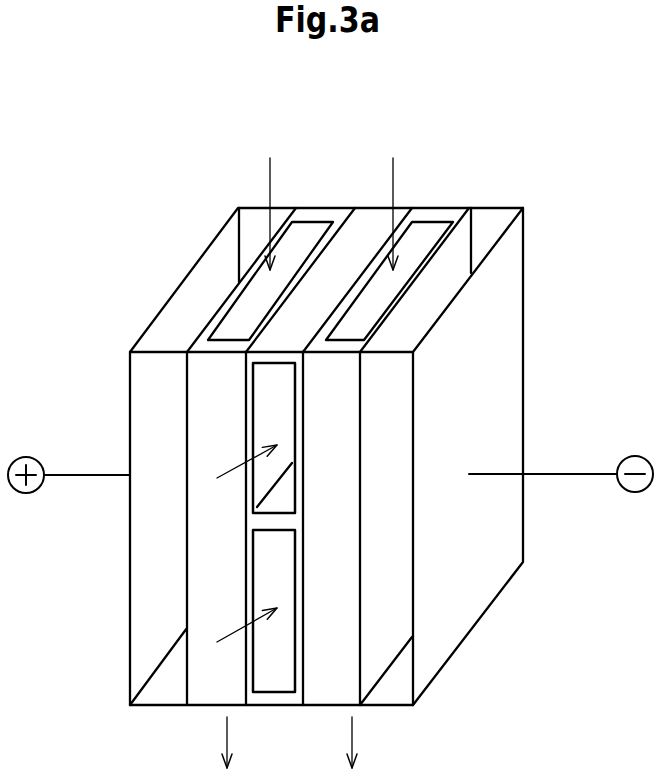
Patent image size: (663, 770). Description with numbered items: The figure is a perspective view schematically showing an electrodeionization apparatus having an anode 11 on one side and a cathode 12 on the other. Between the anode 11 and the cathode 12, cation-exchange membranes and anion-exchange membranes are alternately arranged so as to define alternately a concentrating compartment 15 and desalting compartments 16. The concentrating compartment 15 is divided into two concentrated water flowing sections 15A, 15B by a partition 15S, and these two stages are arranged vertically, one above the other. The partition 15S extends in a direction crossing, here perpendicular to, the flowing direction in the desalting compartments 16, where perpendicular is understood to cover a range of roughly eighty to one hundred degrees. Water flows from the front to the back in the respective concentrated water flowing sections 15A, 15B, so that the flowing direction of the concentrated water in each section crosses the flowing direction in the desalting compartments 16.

The anode 11 is at (130, 383).
The cathode 12 is at (497, 527).
The concentrating compartment 15 is at (323, 541).
The concentrated water flowing section 15A is at (283, 412).
The concentrated water flowing section 15B is at (265, 572).
The partition 15S is at (283, 502).
The desalting compartment 16 is at (309, 230).